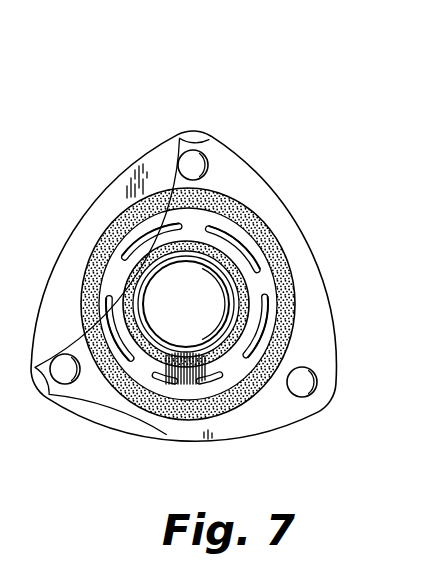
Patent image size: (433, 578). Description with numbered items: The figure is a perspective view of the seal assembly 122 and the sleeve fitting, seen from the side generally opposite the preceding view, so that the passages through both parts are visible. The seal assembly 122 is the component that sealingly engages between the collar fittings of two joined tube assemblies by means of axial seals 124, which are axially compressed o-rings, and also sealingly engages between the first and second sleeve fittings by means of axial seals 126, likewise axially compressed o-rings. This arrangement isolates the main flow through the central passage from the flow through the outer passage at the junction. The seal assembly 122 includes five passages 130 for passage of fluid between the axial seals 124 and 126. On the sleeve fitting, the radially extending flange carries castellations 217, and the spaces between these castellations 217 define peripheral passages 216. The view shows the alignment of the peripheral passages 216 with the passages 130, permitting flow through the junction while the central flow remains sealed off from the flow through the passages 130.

The seal assembly 122 is at (56, 219).
The axial seals 124 is at (258, 230).
The axial seals 126 is at (220, 259).
The passages 130 is at (261, 262).
The peripheral passage 216 is at (173, 388).
The castellations 217 is at (196, 388).